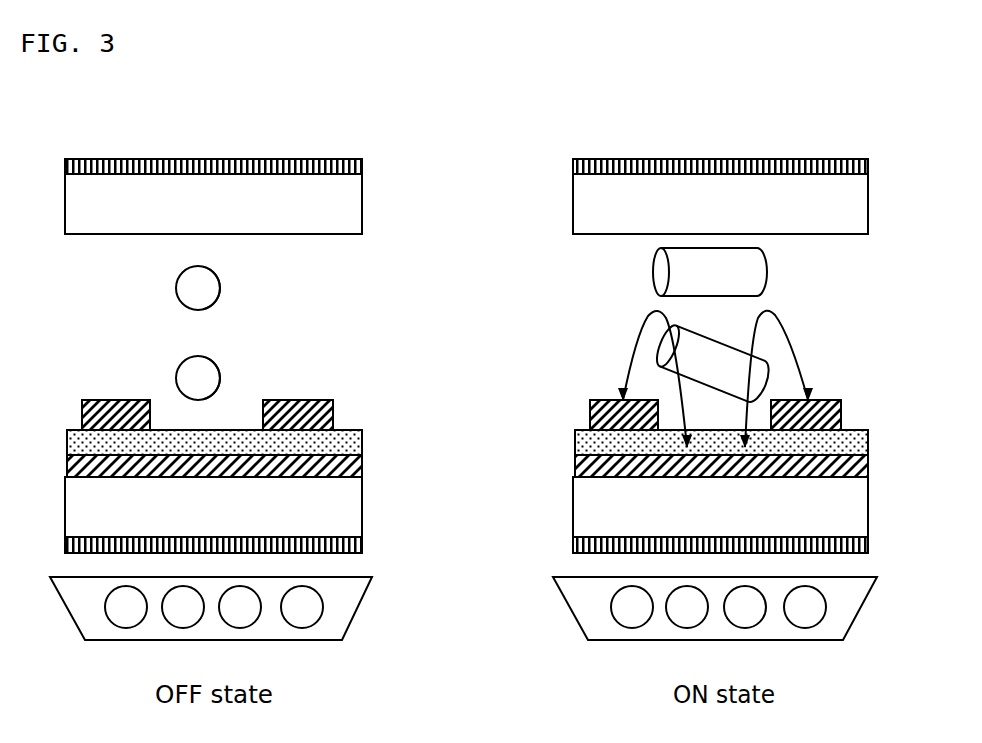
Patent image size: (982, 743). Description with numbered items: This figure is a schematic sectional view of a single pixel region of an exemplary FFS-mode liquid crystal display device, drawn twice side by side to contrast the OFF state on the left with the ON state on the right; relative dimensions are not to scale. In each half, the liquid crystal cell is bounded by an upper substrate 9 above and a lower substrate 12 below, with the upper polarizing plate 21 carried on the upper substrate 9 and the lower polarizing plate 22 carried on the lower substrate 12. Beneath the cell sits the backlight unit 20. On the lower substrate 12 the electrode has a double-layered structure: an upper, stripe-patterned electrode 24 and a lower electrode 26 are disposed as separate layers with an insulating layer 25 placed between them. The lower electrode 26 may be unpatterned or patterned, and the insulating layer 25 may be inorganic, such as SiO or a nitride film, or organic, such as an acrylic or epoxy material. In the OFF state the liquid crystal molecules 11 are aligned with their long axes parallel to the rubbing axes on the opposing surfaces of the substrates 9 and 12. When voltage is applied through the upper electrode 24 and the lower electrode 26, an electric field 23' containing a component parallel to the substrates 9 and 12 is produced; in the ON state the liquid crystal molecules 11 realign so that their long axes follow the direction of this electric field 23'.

The upper substrate of liquid crystal cell 9 is at (568, 224).
The upper polarizing plate 21 is at (557, 175).
The liquid crystal molecule 11 is at (230, 307).
The direction of applied electric field 23' is at (605, 364).
The stripe-patterned electrode 24 is at (588, 402).
The insulating layer 25 is at (570, 445).
The electrode 26 is at (570, 469).
The lower substrate of liquid crystal cell 12 is at (570, 517).
The lower polarizing plate 22 is at (563, 553).
The backlight unit 20 is at (563, 602).